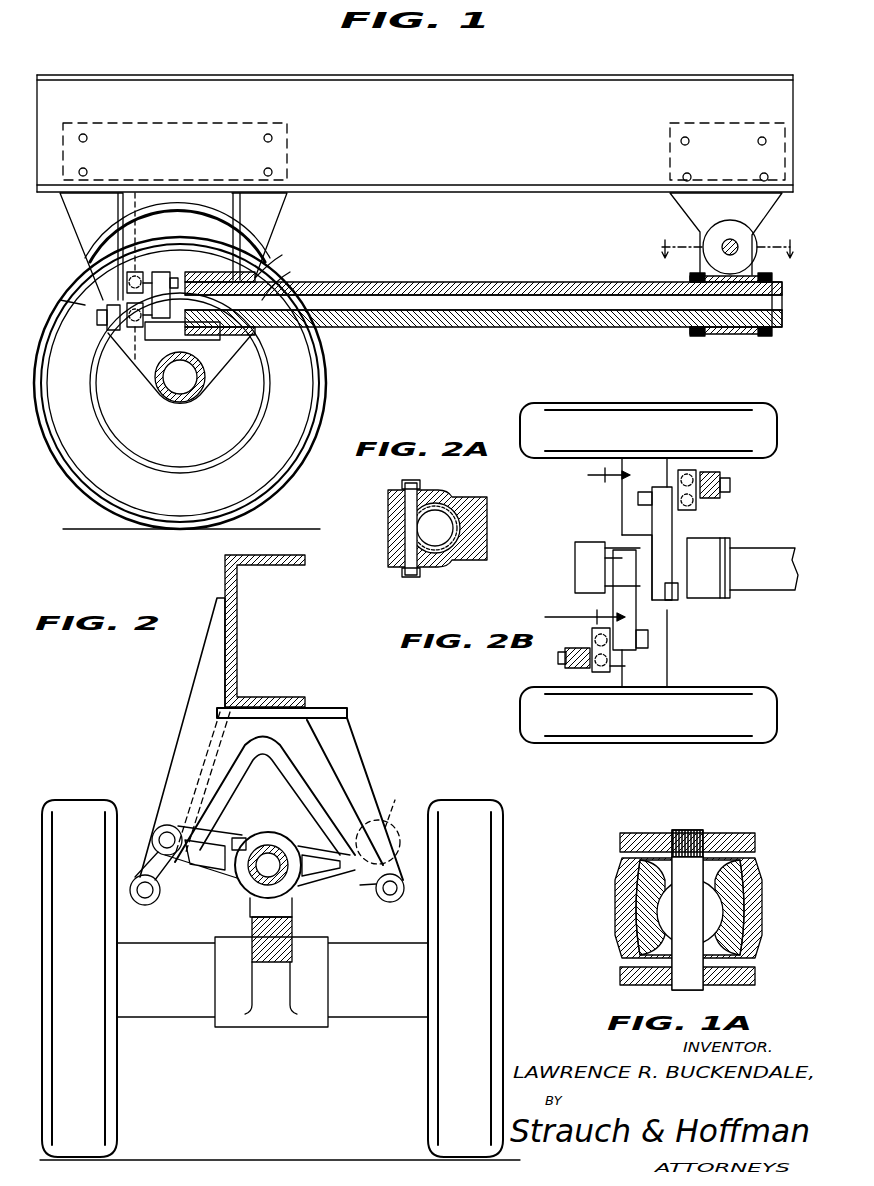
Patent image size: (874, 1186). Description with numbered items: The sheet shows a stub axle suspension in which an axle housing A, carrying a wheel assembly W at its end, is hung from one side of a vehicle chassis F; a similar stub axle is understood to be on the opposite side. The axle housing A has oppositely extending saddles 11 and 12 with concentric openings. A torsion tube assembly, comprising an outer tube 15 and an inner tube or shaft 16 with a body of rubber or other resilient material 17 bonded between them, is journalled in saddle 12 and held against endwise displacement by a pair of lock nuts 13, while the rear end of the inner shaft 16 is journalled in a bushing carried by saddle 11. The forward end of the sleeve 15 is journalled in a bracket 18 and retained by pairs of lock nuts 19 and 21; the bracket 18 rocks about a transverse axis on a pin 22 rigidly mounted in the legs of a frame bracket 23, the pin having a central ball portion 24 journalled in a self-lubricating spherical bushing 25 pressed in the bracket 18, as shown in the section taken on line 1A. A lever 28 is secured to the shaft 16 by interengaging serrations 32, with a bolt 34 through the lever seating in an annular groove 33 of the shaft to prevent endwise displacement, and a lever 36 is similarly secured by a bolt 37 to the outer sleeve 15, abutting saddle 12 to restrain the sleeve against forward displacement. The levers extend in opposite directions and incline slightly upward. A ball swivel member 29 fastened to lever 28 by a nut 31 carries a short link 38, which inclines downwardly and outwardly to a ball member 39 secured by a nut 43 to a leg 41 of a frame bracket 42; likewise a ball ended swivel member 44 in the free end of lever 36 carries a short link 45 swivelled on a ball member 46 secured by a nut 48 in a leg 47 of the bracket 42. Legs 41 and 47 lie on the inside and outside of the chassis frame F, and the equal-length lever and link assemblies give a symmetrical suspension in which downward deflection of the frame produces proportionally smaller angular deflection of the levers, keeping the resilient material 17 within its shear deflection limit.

In FIG. 1, the vehicle chassis F is at (383, 85).
In FIG. 2, the vehicle chassis F is at (237, 640).
In FIG. 1, the axle housing A is at (210, 400).
In FIG. 2B, the axle housing A is at (667, 662).
In FIG. 2, the axle housing A is at (178, 1000).
In FIG. 1, the wheel assembly W is at (312, 386).
In FIG. 2B, the wheel assembly W is at (700, 722).
In FIG. 2, the wheel assembly W is at (108, 1092).
In FIG. 1, the saddle 11 is at (110, 330).
In FIG. 2B, the saddle 11 is at (575, 558).
In FIG. 1, the saddle 12 is at (240, 345).
In FIG. 2B, the saddle 12 is at (708, 598).
In FIG. 1, the lock nuts 13 is at (280, 270).
In FIG. 2B, the lock nuts 13 is at (725, 598).
In FIG. 1, the outer tube 15 is at (470, 327).
In FIG. 2B, the outer tube 15 is at (775, 590).
In FIG. 1, the inner tube or shaft 16 is at (535, 295).
In FIG. 2A, the inner tube or shaft 16 is at (450, 505).
In FIG. 2B, the inner tube or shaft 16 is at (680, 470).
In FIG. 2, the inner tube or shaft 16 is at (268, 842).
In FIG. 1, the resilient material 17 is at (585, 327).
In FIG. 1, the bracket 18 is at (735, 334).
In FIG. 1A, the bracket 18 is at (755, 905).
In FIG. 1, the lock nuts 19 is at (697, 336).
In FIG. 1, the lock nuts 21 is at (765, 336).
In FIG. 1, the pin 22 is at (703, 247).
In FIG. 1A, the pin 22 is at (690, 830).
In FIG. 1, the frame bracket 23 is at (710, 210).
In FIG. 1A, the frame bracket 23 is at (740, 833).
In FIG. 1A, the ball portion 24 is at (690, 912).
In FIG. 1A, the spherical bushing 25 is at (742, 870).
In FIG. 1, the lever 28 is at (160, 272).
In FIG. 2A, the lever 28 is at (470, 555).
In FIG. 2B, the lever 28 is at (613, 612).
In FIG. 2, the lever 28 is at (330, 870).
In FIG. 1, the ball swivel member 29 is at (135, 193).
In FIG. 2B, the ball swivel member 29 is at (592, 636).
In FIG. 2, the ball swivel member 29 is at (398, 804).
In FIG. 1, the nut 31 is at (176, 278).
In FIG. 2B, the nut 31 is at (648, 638).
In FIG. 2A, the serrations 32 is at (437, 505).
In FIG. 2A, the annular groove 33 is at (432, 555).
In FIG. 2A, the bolt 34 is at (397, 570).
In FIG. 2B, the bolt 34 is at (638, 498).
In FIG. 2, the bolt 34 is at (240, 838).
In FIG. 1, the lever 36 is at (230, 240).
In FIG. 2B, the lever 36 is at (648, 525).
In FIG. 2, the lever 36 is at (200, 870).
In FIG. 2B, the bolt 37 is at (678, 590).
In FIG. 1, the link 38 is at (85, 300).
In FIG. 2B, the link 38 is at (615, 670).
In FIG. 2, the link 38 is at (405, 822).
In FIG. 1, the ball member 39 is at (138, 330).
In FIG. 2B, the ball member 39 is at (598, 672).
In FIG. 2, the ball member 39 is at (378, 890).
In FIG. 1, the leg 41 is at (90, 225).
In FIG. 2B, the leg 41 is at (585, 668).
In FIG. 2, the leg 41 is at (355, 765).
In FIG. 1, the frame bracket 42 is at (178, 140).
In FIG. 2, the frame bracket 42 is at (200, 670).
In FIG. 1, the nut 43 is at (97, 318).
In FIG. 2B, the nut 43 is at (558, 658).
In FIG. 2, the nut 43 is at (398, 898).
In FIG. 2B, the ball ended swivel member 44 is at (690, 510).
In FIG. 2, the ball ended swivel member 44 is at (167, 826).
In FIG. 2B, the link 45 is at (593, 544).
In FIG. 2, the link 45 is at (153, 836).
In FIG. 2, the ball member 46 is at (145, 905).
In FIG. 1, the leg 47 is at (268, 235).
In FIG. 2B, the leg 47 is at (712, 472).
In FIG. 2, the leg 47 is at (178, 722).
In FIG. 2B, the nut 48 is at (730, 485).
In FIG. 1, the section line 1A is at (727, 249).